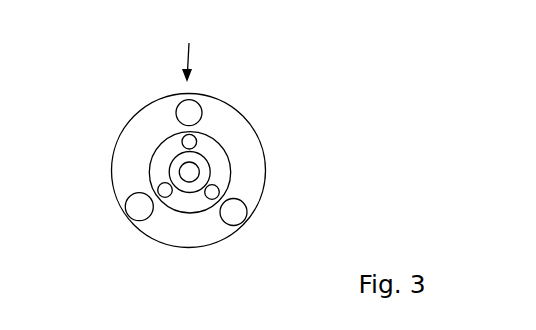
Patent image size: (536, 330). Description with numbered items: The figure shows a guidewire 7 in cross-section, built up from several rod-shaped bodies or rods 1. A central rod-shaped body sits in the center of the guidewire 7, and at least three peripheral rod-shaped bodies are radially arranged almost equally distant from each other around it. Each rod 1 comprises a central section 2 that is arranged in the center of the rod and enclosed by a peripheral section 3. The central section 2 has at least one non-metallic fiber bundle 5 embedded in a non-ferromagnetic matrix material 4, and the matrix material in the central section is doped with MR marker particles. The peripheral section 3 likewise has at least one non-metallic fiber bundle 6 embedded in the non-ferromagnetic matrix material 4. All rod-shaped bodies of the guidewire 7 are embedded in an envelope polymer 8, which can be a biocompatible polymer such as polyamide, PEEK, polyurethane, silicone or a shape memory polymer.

The rod 1 is at (188, 116).
The central section 2 is at (183, 184).
The peripheral section 3 is at (195, 202).
The non-ferromagnetic matrix material 4 is at (178, 158).
The non-metallic fiber bundle 5 is at (190, 172).
The non-metallic fiber bundle 6 is at (160, 189).
The guidewire 7 is at (190, 49).
The envelope polymer 8 is at (257, 172).